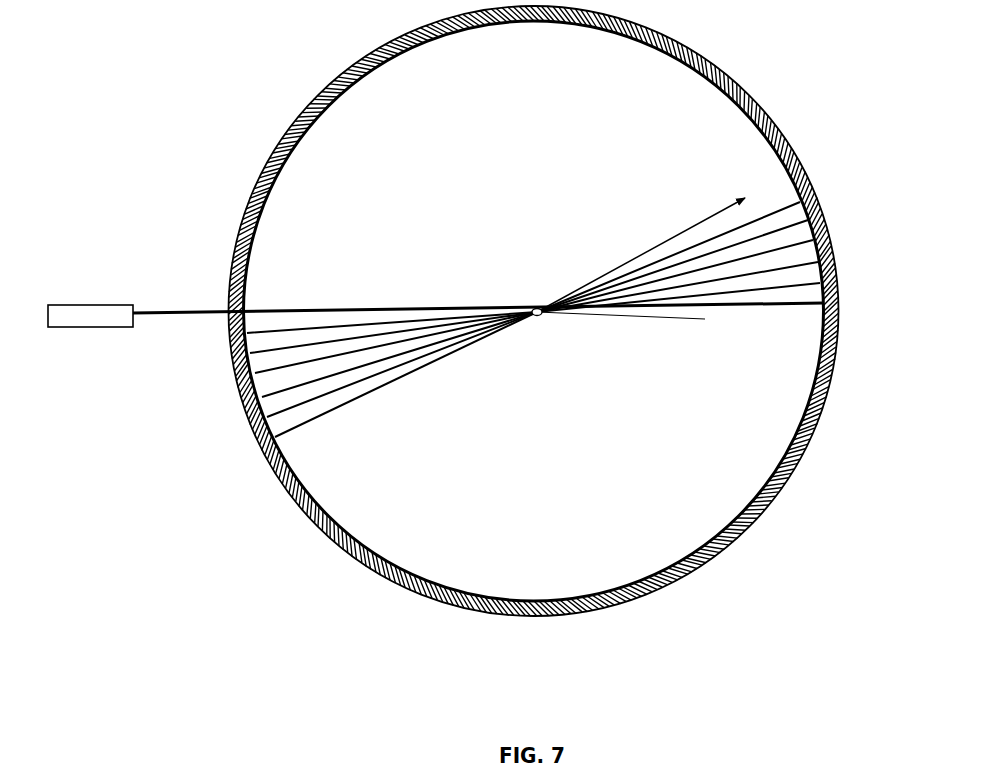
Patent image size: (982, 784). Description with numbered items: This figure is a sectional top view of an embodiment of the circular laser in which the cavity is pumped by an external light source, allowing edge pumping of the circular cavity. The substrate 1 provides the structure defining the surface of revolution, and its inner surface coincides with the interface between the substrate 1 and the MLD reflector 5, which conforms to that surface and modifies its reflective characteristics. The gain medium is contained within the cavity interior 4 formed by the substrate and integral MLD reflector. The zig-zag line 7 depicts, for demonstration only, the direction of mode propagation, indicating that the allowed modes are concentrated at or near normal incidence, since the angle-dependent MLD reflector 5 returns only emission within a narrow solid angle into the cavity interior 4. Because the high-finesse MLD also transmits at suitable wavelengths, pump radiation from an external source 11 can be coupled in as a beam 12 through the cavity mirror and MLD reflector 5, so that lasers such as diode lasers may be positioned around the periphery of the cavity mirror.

The substrate 1 is at (661, 591).
The cavity interior 4 is at (534, 311).
The MLD reflector 5 is at (288, 138).
The zig-zag line 7 is at (416, 381).
The laser source 11 is at (86, 330).
The laser beam 12 is at (189, 318).